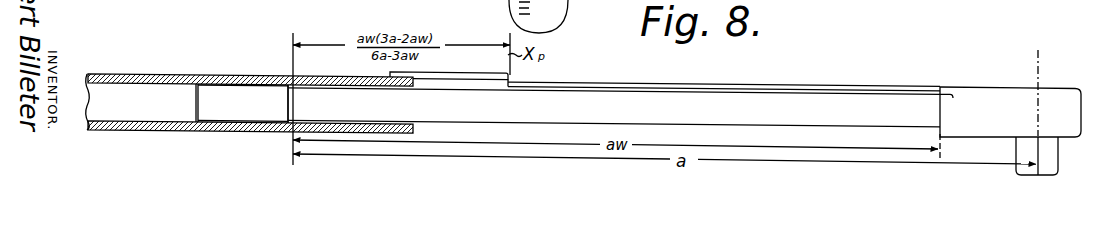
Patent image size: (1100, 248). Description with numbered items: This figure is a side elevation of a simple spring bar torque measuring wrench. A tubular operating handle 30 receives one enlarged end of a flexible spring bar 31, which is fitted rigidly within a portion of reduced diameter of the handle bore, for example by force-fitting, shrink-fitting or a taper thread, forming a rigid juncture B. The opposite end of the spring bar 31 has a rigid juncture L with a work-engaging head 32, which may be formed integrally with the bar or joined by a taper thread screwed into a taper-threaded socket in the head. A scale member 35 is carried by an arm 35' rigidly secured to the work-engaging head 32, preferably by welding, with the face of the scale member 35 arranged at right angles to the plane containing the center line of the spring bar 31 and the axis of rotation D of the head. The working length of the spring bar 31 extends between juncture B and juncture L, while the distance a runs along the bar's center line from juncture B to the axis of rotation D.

The tubular operating handle 30 is at (147, 74).
The spring bar 31 is at (648, 108).
The work-engaging head 32 is at (987, 98).
The scale member 35 is at (487, 70).
The arm 35' is at (724, 74).
The rigid juncture of spring bar with operating handle B is at (285, 90).
The rigid juncture of spring bar with work-engaging head L is at (935, 92).
The axis of rotation of work-engaging head D is at (1038, 68).